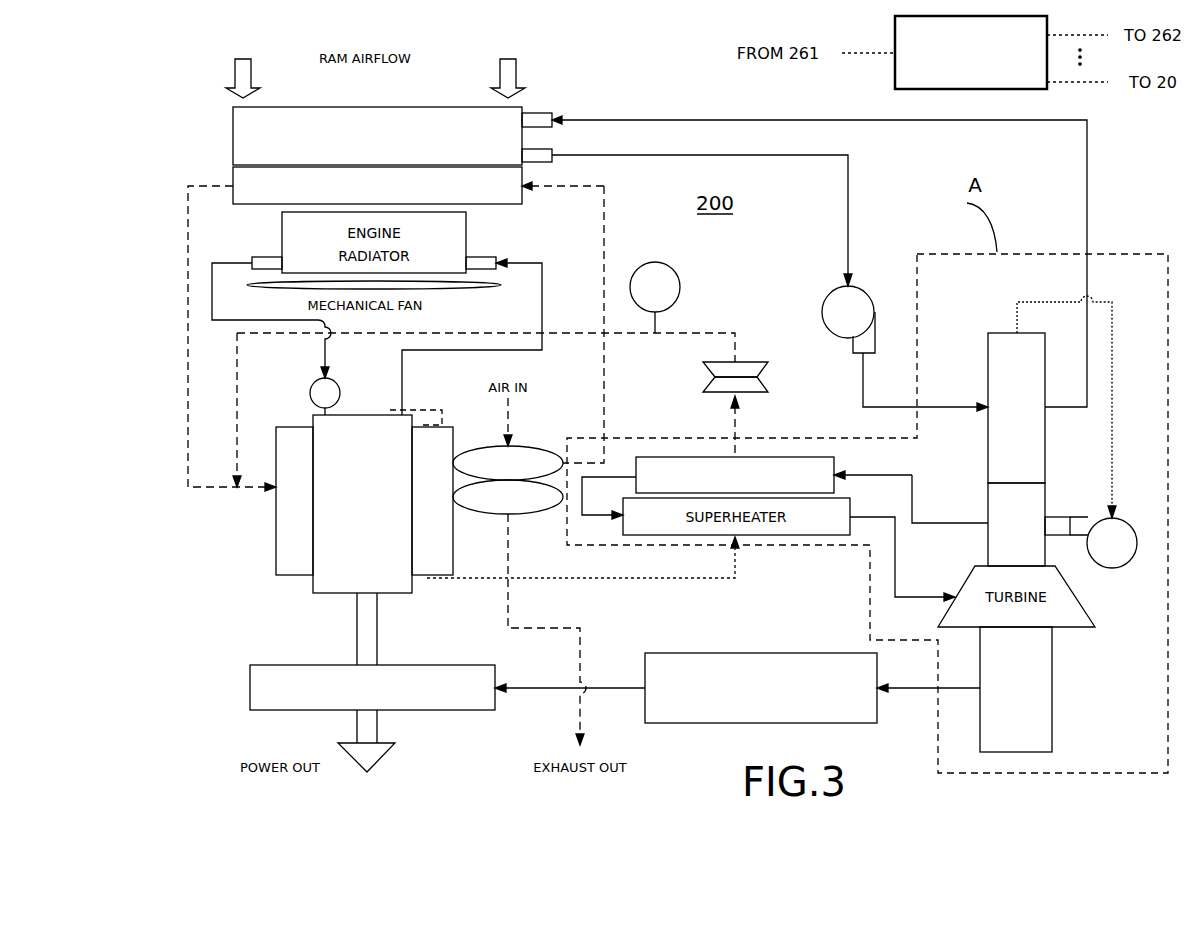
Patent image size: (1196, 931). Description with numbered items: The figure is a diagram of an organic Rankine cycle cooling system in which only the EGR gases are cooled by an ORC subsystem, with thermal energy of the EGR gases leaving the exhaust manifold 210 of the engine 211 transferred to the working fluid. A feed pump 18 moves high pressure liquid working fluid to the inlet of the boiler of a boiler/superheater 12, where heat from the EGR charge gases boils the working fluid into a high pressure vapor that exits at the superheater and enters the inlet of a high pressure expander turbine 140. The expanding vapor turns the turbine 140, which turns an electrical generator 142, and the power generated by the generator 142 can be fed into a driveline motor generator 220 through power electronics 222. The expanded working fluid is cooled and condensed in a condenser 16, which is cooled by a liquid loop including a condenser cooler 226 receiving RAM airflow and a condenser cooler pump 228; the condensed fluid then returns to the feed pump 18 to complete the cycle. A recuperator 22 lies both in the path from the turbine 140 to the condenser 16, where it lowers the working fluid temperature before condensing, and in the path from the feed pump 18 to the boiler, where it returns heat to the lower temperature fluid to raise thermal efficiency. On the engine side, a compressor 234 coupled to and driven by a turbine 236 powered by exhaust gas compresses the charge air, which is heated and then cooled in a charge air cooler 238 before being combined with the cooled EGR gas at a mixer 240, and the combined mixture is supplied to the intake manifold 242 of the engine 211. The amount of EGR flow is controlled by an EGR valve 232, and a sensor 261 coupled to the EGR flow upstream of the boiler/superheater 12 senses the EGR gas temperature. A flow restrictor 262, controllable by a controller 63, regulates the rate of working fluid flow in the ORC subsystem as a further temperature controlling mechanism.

The condenser cooler 226 is at (437, 100).
The charge air cooler 238 is at (522, 198).
The mixer 240 is at (237, 490).
The intake manifold 242 is at (275, 540).
The engine 211 is at (344, 564).
The exhaust manifold 210 is at (427, 578).
The compressor 234 is at (535, 446).
The turbine 236 is at (530, 514).
The driveline motor generator 220 is at (276, 665).
The sensor 261 is at (680, 288).
The EGR valve 232 is at (752, 362).
The condenser cooler pump 228 is at (830, 292).
The condenser 16 is at (988, 460).
The recuperator 22 is at (988, 542).
The flow restrictor 262 is at (1055, 532).
The turbine 140 is at (1088, 606).
The feed pump 18 is at (1137, 520).
The generator 142 is at (1052, 708).
The boiler/superheater 12 is at (683, 457).
The power electronics 222 is at (797, 653).
The controller 63 is at (961, 73).